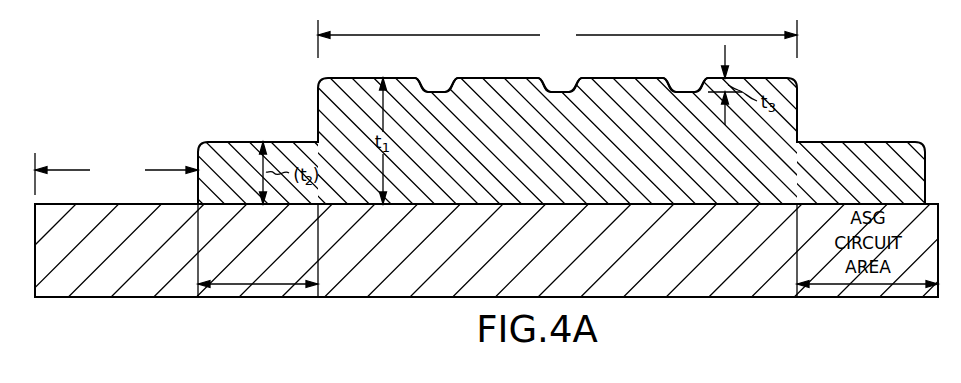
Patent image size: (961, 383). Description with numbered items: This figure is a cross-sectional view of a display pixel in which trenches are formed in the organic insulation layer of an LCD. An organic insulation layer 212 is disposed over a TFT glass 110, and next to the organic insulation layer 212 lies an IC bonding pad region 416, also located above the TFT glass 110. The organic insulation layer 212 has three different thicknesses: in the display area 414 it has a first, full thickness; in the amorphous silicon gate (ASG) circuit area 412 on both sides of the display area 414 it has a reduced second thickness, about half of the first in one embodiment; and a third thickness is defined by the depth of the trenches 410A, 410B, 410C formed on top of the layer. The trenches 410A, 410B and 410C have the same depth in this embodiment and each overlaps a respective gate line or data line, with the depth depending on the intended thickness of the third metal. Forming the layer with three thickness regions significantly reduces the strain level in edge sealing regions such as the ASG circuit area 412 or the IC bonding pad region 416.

The TFT glass 110 is at (556, 277).
The organic insulation layer 212 is at (556, 176).
The trench 410A is at (421, 83).
The trench 410B is at (545, 83).
The trench 410C is at (665, 86).
The amorphous silicon gate (ASG) circuit area 412 is at (261, 297).
The display area 414 is at (557, 39).
The IC bonding pad region 416 is at (116, 168).